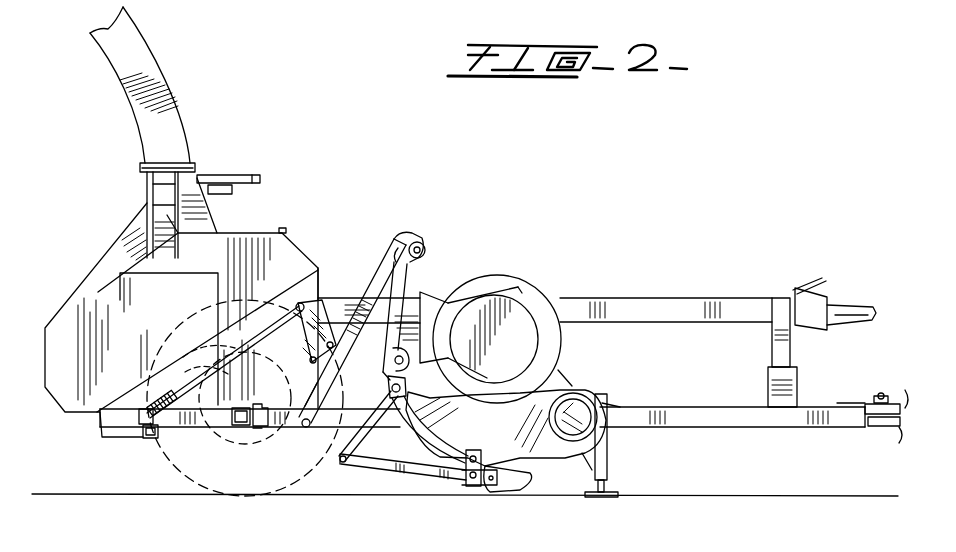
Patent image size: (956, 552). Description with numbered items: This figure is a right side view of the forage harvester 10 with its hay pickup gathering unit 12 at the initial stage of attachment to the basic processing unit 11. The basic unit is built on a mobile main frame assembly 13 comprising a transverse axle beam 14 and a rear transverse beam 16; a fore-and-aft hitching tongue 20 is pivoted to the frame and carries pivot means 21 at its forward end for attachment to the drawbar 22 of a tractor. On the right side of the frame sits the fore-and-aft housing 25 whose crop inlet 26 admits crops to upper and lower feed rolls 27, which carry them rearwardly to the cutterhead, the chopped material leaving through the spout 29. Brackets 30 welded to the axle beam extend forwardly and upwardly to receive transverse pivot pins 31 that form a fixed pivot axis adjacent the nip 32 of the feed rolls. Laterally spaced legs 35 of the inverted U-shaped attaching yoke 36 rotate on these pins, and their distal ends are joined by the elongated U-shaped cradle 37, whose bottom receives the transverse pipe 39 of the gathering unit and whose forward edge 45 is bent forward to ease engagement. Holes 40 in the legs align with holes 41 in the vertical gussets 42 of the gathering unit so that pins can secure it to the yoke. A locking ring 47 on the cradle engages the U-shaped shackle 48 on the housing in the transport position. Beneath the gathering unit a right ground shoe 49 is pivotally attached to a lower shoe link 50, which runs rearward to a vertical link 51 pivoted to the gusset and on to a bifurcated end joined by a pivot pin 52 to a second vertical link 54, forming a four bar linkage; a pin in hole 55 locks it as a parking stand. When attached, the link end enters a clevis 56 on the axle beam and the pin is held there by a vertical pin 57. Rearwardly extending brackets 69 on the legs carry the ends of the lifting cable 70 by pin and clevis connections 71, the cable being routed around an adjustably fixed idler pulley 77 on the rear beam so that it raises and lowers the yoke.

The forage harvester 10 is at (382, 156).
The basic processing unit 11 is at (83, 296).
The hay pickup gathering unit 12 is at (587, 377).
The mobile main frame assembly 13 is at (188, 431).
The transverse axle beam 14 is at (244, 427).
The rear transverse beam 16 is at (152, 438).
The hitching tongue 20 is at (722, 406).
The pivot means 21 is at (880, 395).
The drawbar 22 is at (887, 424).
The housing 25 is at (235, 232).
The crop inlet 26 is at (313, 268).
The feed rolls 27 is at (328, 295).
The spout 29 is at (160, 62).
The brackets 30 is at (316, 430).
The pivot pins 31 is at (253, 336).
The nip 32 is at (210, 342).
The legs 35 is at (395, 260).
The attaching yoke 36 is at (366, 268).
The cradle 37 is at (412, 238).
The transverse pipe 39 is at (428, 240).
The holes 40 is at (333, 345).
The holes 41 is at (392, 362).
The vertical gussets 42 is at (380, 376).
The forward edge 45 is at (428, 268).
The locking ring 47 is at (396, 250).
The U-shaped shackle 48 is at (283, 231).
The right ground shoe 49 is at (528, 490).
The lower shoe link 50 is at (391, 473).
The vertical link 51 is at (461, 480).
The pivot pin 52 is at (341, 459).
The second vertical link 54 is at (367, 446).
The hole 55 is at (400, 385).
The clevis 56 is at (268, 430).
The vertical pin 57 is at (257, 430).
The brackets 69 is at (312, 297).
The lifting cable 70 is at (200, 367).
The pin and clevis connections 71 is at (278, 308).
The idler pulley 77 is at (167, 397).